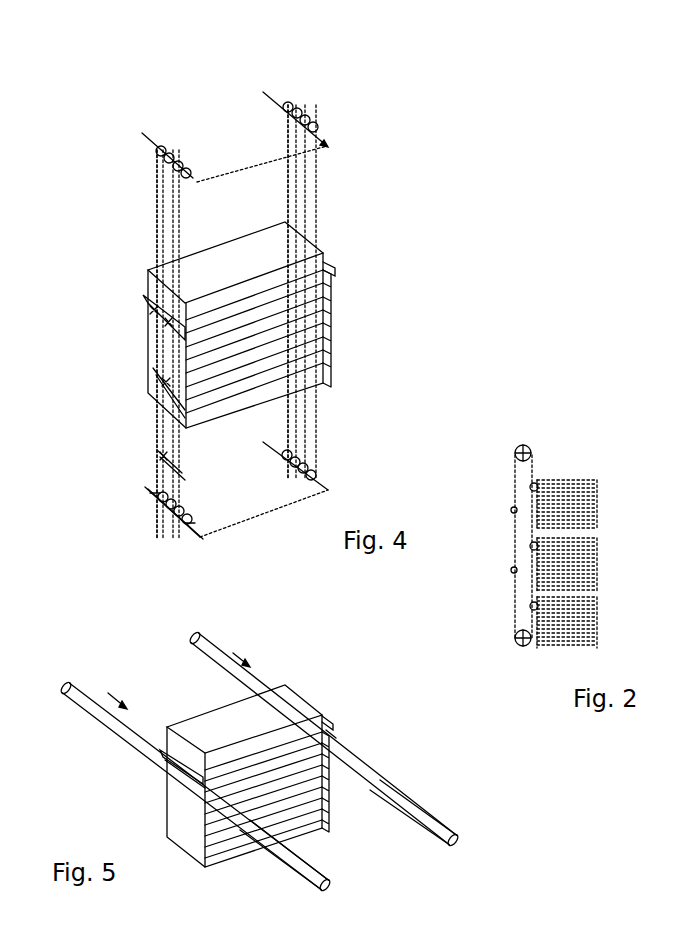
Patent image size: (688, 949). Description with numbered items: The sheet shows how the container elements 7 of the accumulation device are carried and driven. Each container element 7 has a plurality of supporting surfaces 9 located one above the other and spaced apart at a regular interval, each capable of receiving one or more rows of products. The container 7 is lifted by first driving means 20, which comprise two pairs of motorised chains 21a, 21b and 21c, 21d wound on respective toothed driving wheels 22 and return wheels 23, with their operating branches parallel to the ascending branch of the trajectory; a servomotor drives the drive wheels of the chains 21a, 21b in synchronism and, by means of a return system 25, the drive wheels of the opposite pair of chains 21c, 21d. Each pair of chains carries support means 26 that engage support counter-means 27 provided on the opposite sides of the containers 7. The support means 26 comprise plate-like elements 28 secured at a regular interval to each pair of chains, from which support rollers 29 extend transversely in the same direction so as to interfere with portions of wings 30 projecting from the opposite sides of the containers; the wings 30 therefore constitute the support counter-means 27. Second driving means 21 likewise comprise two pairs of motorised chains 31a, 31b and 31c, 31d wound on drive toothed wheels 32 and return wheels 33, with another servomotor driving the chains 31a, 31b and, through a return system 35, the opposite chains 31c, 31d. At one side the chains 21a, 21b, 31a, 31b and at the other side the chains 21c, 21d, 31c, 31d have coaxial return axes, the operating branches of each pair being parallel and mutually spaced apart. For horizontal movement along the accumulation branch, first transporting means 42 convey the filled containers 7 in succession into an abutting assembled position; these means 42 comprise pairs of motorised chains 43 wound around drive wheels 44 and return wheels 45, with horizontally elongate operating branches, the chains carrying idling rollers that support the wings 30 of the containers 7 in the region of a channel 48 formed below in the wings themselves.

In FIG. 4, the container element 7 is at (263, 220).
In FIG. 2, the container element 7 is at (565, 480).
In FIG. 4, the supporting surfaces 9 is at (324, 272).
In FIG. 4, the first driving means 20 is at (200, 112).
In FIG. 4, the second driving means 21 is at (222, 322).
In FIG. 4, the motorised chain 21a is at (175, 205).
In FIG. 4, the motorised chain 21b is at (181, 236).
In FIG. 4, the motorised chain 21c is at (305, 203).
In FIG. 4, the motorised chain 21d is at (316, 228).
In FIG. 4, the toothed driving wheels 22 is at (172, 152).
In FIG. 4, the return wheels 23 is at (168, 512).
In FIG. 4, the return system 25 is at (253, 165).
In FIG. 4, the support means 26 is at (158, 323).
In FIG. 4, the support counter-means 27 is at (148, 310).
In FIG. 4, the plate-like elements 28 is at (150, 355).
In FIG. 4, the support rollers 29 is at (150, 366).
In FIG. 4, the wings 30 is at (145, 297).
In FIG. 5, the wings 30 is at (325, 720).
In FIG. 4, the motorised chain 31a is at (157, 230).
In FIG. 4, the motorised chain 31b is at (164, 200).
In FIG. 4, the motorised chain 31c is at (288, 170).
In FIG. 4, the motorised chain 31d is at (296, 192).
In FIG. 4, the drive toothed wheels 32 is at (160, 500).
In FIG. 4, the return wheels 33 is at (161, 146).
In FIG. 4, the return system 35 is at (257, 515).
In FIG. 5, the first transporting means 42 is at (105, 648).
In FIG. 5, the motorised chains 43 is at (370, 765).
In FIG. 5, the drive wheels 44 is at (460, 838).
In FIG. 5, the return wheels 45 is at (190, 640).
In FIG. 5, the channel 48 is at (330, 735).